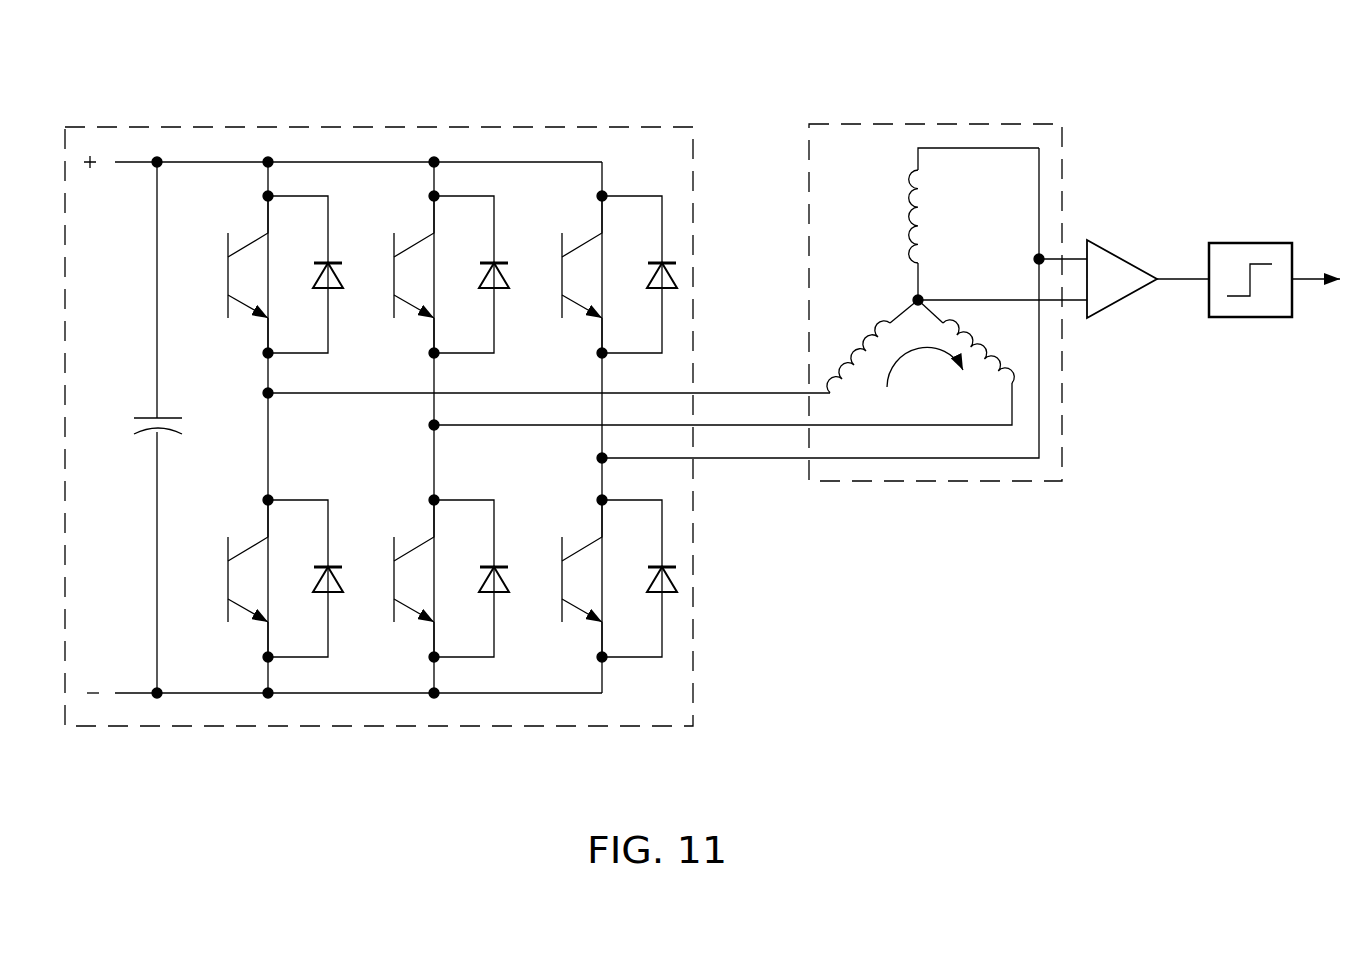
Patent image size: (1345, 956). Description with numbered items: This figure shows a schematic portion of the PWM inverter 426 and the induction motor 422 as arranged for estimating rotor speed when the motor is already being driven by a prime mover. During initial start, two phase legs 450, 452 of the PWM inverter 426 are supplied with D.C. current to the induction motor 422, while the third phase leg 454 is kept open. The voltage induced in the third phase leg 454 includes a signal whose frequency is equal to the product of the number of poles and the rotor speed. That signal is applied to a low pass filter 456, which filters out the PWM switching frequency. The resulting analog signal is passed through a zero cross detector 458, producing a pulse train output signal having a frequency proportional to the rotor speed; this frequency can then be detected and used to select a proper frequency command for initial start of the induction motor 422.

The PWM inverter 426 is at (360, 127).
The induction motor 422 is at (888, 123).
The phase leg 450 is at (713, 390).
The phase leg 452 is at (722, 425).
The third phase leg 454 is at (790, 458).
The low pass filter 456 is at (1100, 245).
The zero cross detector 458 is at (1240, 243).